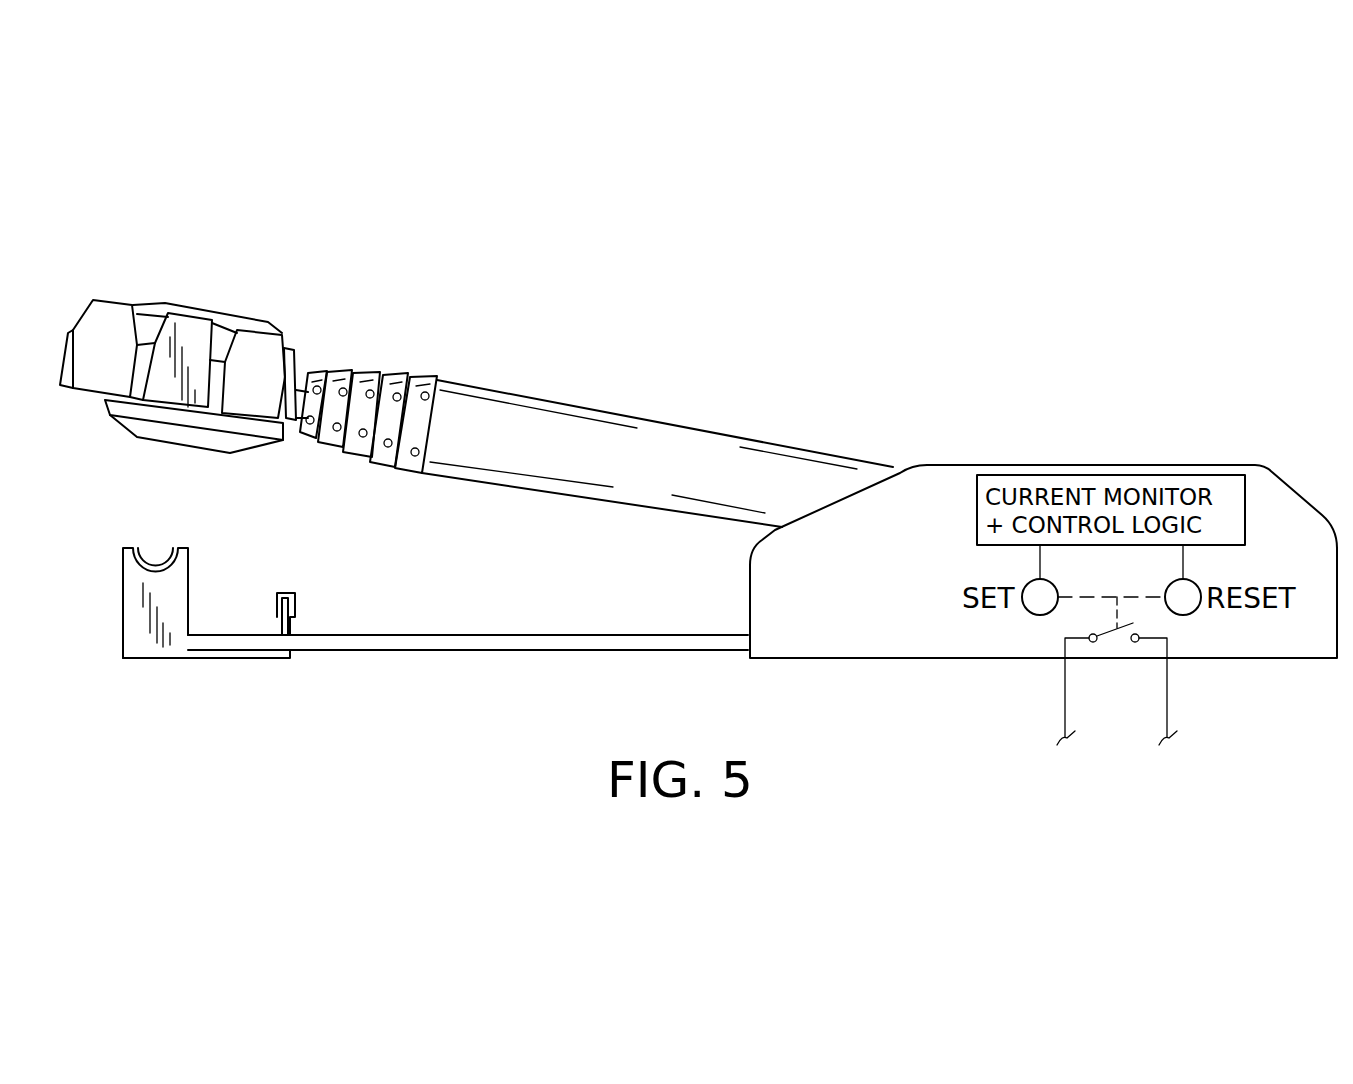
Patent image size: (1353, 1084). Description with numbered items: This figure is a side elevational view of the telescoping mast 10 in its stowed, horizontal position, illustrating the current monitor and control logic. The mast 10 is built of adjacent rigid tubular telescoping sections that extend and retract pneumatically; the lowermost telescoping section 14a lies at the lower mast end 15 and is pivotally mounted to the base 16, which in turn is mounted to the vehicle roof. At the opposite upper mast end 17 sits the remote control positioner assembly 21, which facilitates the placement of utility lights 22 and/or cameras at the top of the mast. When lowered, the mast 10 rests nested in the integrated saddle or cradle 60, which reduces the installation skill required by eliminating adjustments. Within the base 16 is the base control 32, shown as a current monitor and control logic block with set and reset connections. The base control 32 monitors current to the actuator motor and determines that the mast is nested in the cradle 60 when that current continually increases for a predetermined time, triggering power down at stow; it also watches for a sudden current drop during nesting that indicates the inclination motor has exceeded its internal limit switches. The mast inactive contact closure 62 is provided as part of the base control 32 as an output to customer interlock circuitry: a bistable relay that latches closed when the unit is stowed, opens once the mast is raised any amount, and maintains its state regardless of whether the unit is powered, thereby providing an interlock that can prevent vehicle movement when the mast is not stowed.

The telescoping mast 10 is at (628, 400).
The telescoping section 14a is at (548, 407).
The lower mast end 15 is at (892, 468).
The base 16 is at (947, 465).
The upper mast end 17 is at (319, 373).
The remote control positioner assembly 21 is at (227, 318).
The utility lights 22 is at (188, 323).
The base control 32 is at (962, 637).
The cradle 60 is at (155, 577).
The mast inactive contact closure 62 is at (1117, 643).